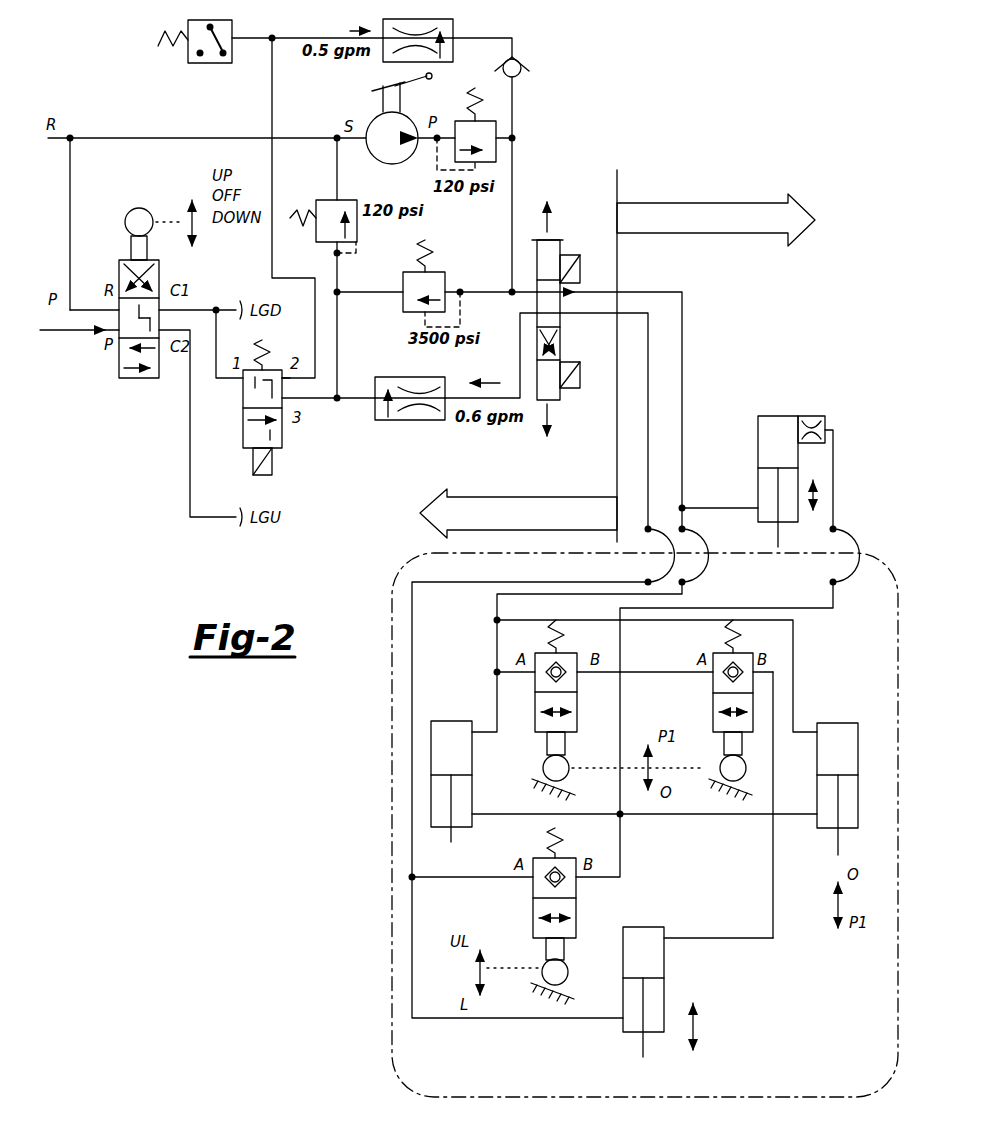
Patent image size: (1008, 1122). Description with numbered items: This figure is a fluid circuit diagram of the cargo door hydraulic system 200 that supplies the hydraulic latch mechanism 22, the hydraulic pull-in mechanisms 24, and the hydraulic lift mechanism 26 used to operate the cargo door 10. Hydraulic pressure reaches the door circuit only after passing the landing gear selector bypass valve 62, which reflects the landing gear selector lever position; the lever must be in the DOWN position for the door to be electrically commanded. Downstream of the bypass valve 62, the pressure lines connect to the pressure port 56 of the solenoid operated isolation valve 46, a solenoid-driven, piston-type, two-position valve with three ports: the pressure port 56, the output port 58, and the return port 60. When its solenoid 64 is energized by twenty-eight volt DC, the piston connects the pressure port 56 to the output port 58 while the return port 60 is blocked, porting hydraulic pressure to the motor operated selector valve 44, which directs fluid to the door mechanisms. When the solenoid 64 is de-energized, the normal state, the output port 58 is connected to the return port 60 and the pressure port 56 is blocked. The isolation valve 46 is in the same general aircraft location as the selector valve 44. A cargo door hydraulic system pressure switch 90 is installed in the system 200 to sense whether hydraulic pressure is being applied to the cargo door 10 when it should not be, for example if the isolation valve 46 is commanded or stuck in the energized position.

The cargo door 10 is at (392, 890).
The hydraulic latch mechanism 22 is at (745, 970).
The hydraulic pull-in mechanisms 24 is at (408, 780).
The hydraulic lift mechanism 26 is at (821, 404).
The motor operated selector valve 44 is at (566, 258).
The solenoid operated isolation valve 46 is at (282, 432).
The pressure port 56 is at (230, 380).
The output port 58 is at (288, 378).
The return port 60 is at (320, 404).
The landing gear selector bypass valve 62 is at (128, 378).
The solenoid 64 is at (272, 465).
The cargo door hydraulic system pressure switch 90 is at (208, 63).
The cargo door hydraulic system 200 is at (568, 112).